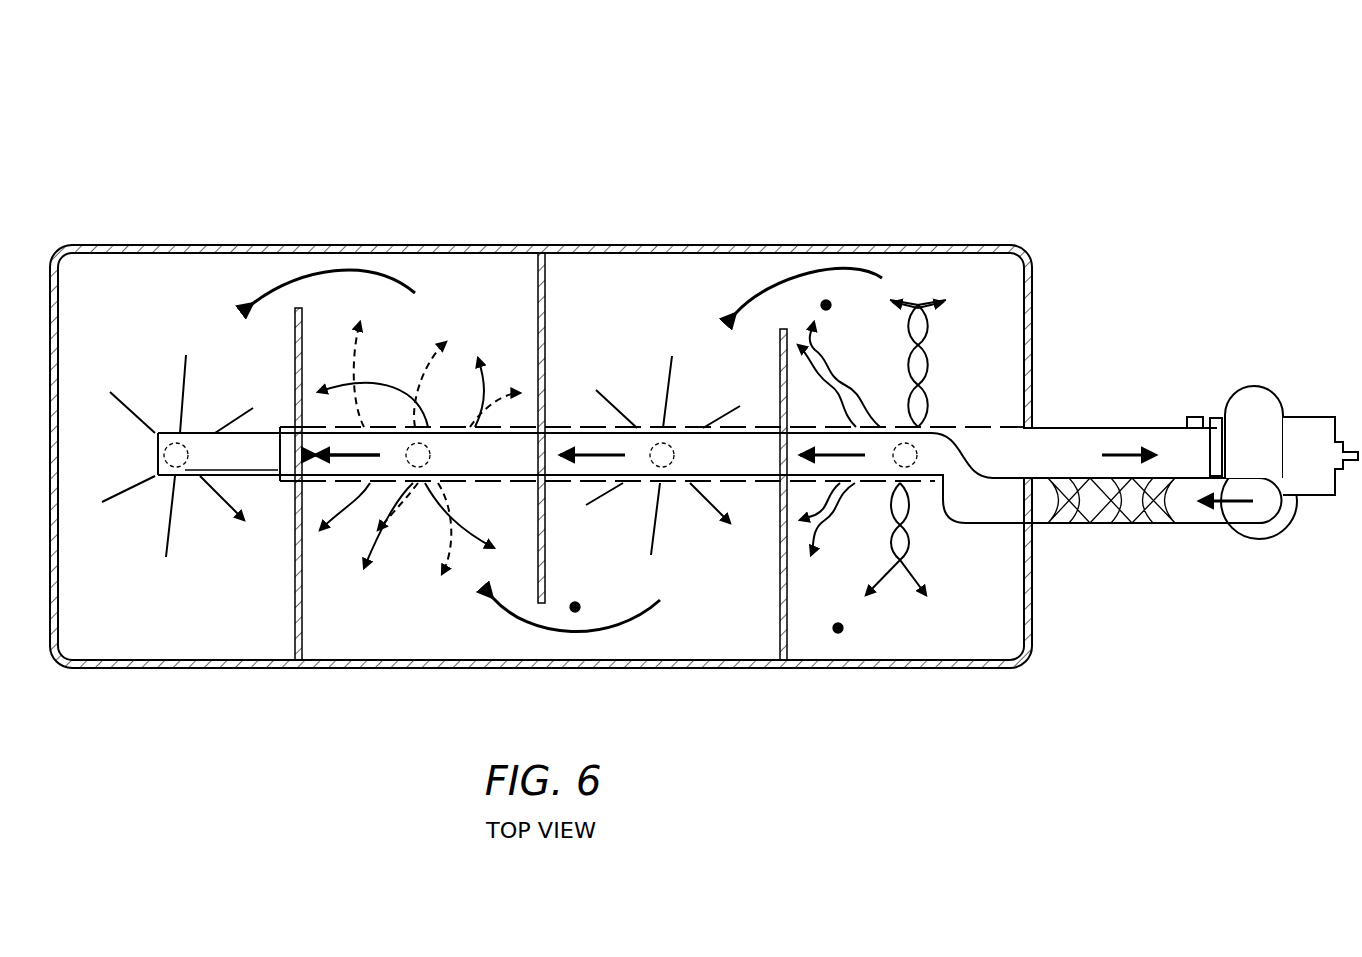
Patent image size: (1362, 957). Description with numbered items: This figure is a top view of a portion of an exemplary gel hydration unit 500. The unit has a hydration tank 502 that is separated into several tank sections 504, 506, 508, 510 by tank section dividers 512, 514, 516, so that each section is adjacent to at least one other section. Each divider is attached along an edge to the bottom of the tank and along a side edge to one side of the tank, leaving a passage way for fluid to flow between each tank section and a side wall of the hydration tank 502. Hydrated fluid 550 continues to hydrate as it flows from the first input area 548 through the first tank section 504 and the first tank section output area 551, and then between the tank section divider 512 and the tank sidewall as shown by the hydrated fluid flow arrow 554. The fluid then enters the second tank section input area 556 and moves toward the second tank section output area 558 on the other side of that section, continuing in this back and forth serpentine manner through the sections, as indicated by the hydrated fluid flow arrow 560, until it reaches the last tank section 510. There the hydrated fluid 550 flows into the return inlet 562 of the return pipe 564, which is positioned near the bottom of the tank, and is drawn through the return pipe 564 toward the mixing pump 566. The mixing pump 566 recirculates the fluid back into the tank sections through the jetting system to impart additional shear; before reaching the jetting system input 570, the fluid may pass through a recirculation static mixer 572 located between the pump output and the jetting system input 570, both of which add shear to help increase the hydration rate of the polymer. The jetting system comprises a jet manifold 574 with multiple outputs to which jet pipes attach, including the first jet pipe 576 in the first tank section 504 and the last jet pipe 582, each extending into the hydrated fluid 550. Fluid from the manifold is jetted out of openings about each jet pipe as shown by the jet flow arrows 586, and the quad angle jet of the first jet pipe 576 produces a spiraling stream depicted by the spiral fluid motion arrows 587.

The gel hydration unit 500 is at (416, 112).
The hydration tank 502 is at (1037, 304).
The first tank section 504 is at (918, 643).
The second tank section 506 is at (730, 643).
The third tank section 508 is at (356, 645).
The Nth tank section 510 is at (158, 645).
The tank section divider 512 is at (780, 366).
The tank section divider 514 is at (538, 301).
The tank section divider 516 is at (294, 376).
The first input area 548 is at (838, 628).
The hydrated fluid 550 is at (84, 314).
The first tank section output area 551 is at (826, 305).
The hydrated fluid flow arrow 554 is at (882, 279).
The second tank section input area 556 is at (680, 277).
The second tank section output area 558 is at (575, 607).
The hydrated fluid flow arrow 560 is at (353, 268).
The return inlet 562 is at (278, 456).
The return pipe 564 is at (1075, 428).
The mixing pump 566 is at (1256, 396).
The jetting system input 570 is at (998, 497).
The recirculation static mixer 572 is at (1112, 512).
The jet manifold 574 is at (520, 482).
The first jet pipe 576 is at (925, 440).
The Mth jet pipe 582 is at (163, 455).
The jet flow arrows 586 is at (666, 388).
The spiral fluid motion arrows 587 is at (946, 353).